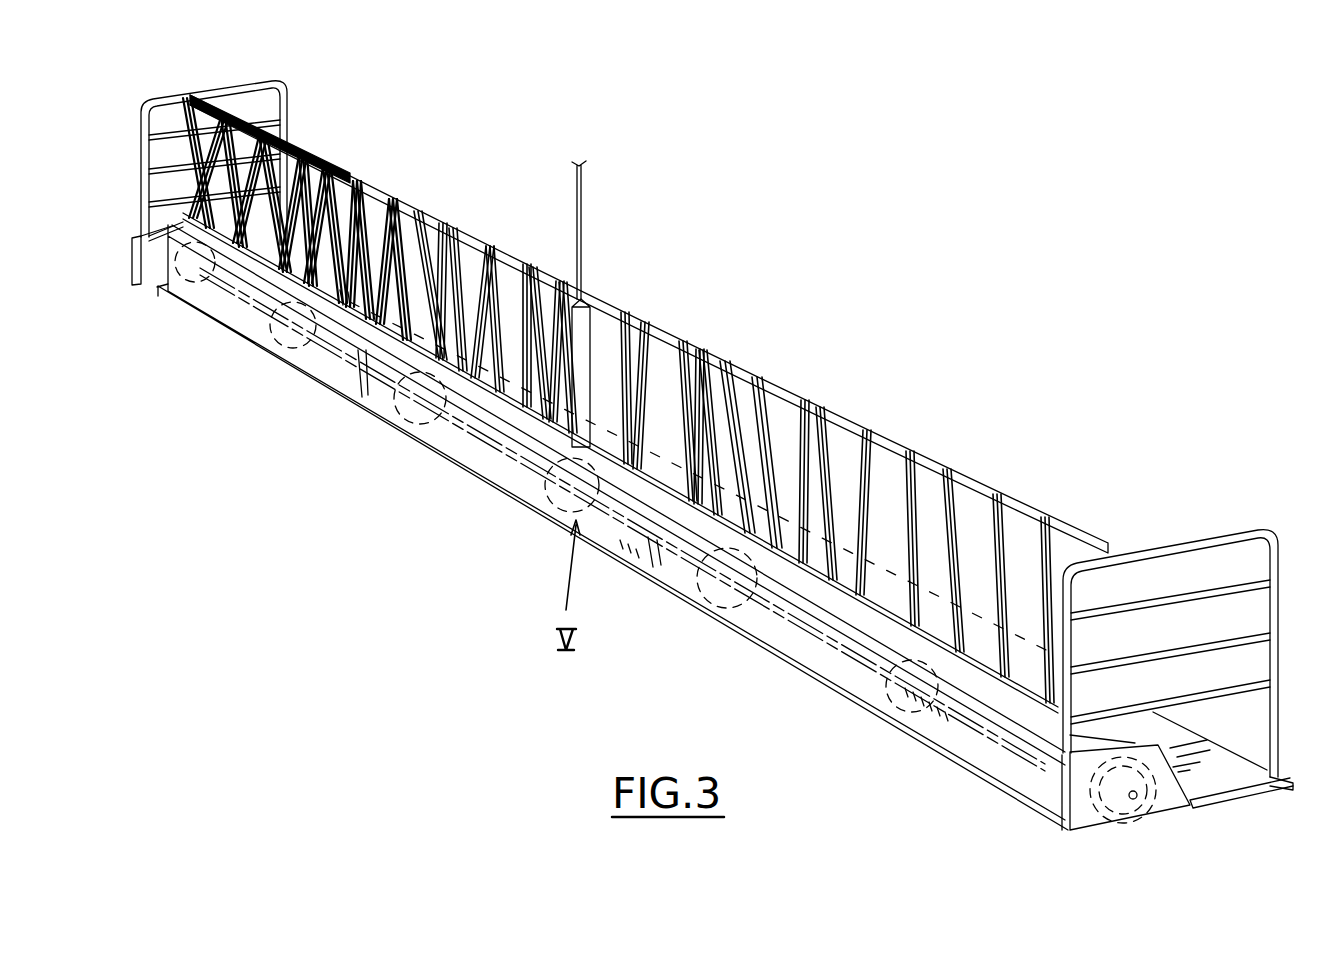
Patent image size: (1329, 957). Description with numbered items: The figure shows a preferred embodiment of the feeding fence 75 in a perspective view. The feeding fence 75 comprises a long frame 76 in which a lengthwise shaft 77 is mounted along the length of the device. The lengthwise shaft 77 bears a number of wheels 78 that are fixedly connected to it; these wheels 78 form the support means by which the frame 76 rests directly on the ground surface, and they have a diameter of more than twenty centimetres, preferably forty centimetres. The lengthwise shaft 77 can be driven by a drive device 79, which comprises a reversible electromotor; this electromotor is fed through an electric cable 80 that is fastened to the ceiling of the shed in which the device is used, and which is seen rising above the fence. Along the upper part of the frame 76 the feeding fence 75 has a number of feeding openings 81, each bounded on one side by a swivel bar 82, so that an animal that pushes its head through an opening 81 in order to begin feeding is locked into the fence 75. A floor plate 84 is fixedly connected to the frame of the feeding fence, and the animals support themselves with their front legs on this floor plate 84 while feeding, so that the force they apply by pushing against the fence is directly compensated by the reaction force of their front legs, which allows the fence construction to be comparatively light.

The feeding fence 75 is at (712, 480).
The frame 76 is at (808, 657).
The lengthwise shaft 77 is at (942, 687).
The wheels 78 is at (887, 683).
The drive device 79 is at (604, 340).
The electric cable 80 is at (583, 207).
The feeding openings 81 is at (852, 460).
The swivel bar 82 is at (867, 488).
The floor plate 84 is at (1177, 740).